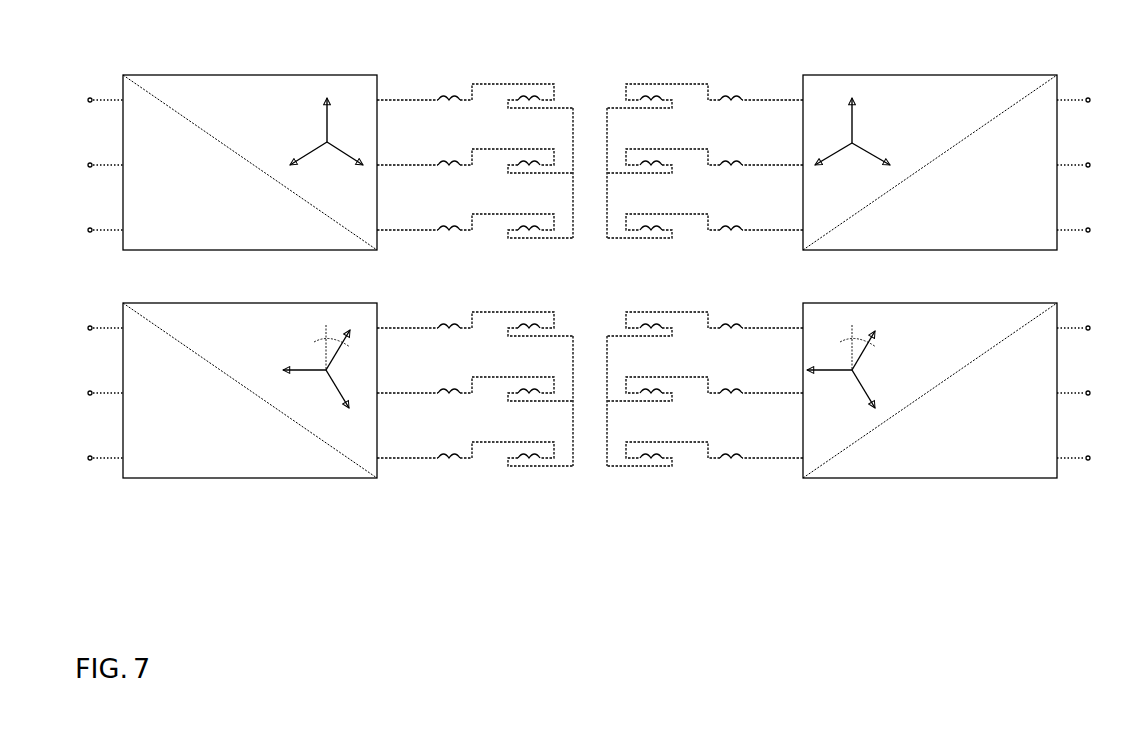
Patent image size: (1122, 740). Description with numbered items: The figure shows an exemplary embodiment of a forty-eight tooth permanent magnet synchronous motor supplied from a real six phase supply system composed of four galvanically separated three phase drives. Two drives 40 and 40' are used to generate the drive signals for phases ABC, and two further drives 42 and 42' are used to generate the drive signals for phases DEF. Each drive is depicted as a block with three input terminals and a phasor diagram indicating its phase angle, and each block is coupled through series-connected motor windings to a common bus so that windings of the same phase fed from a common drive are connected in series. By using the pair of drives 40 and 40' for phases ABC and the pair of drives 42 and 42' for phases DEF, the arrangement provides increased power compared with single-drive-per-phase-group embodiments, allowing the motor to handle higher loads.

The drive 40 is at (232, 141).
The drive 40' is at (946, 139).
The drive 42 is at (232, 368).
The drive 42' is at (946, 366).